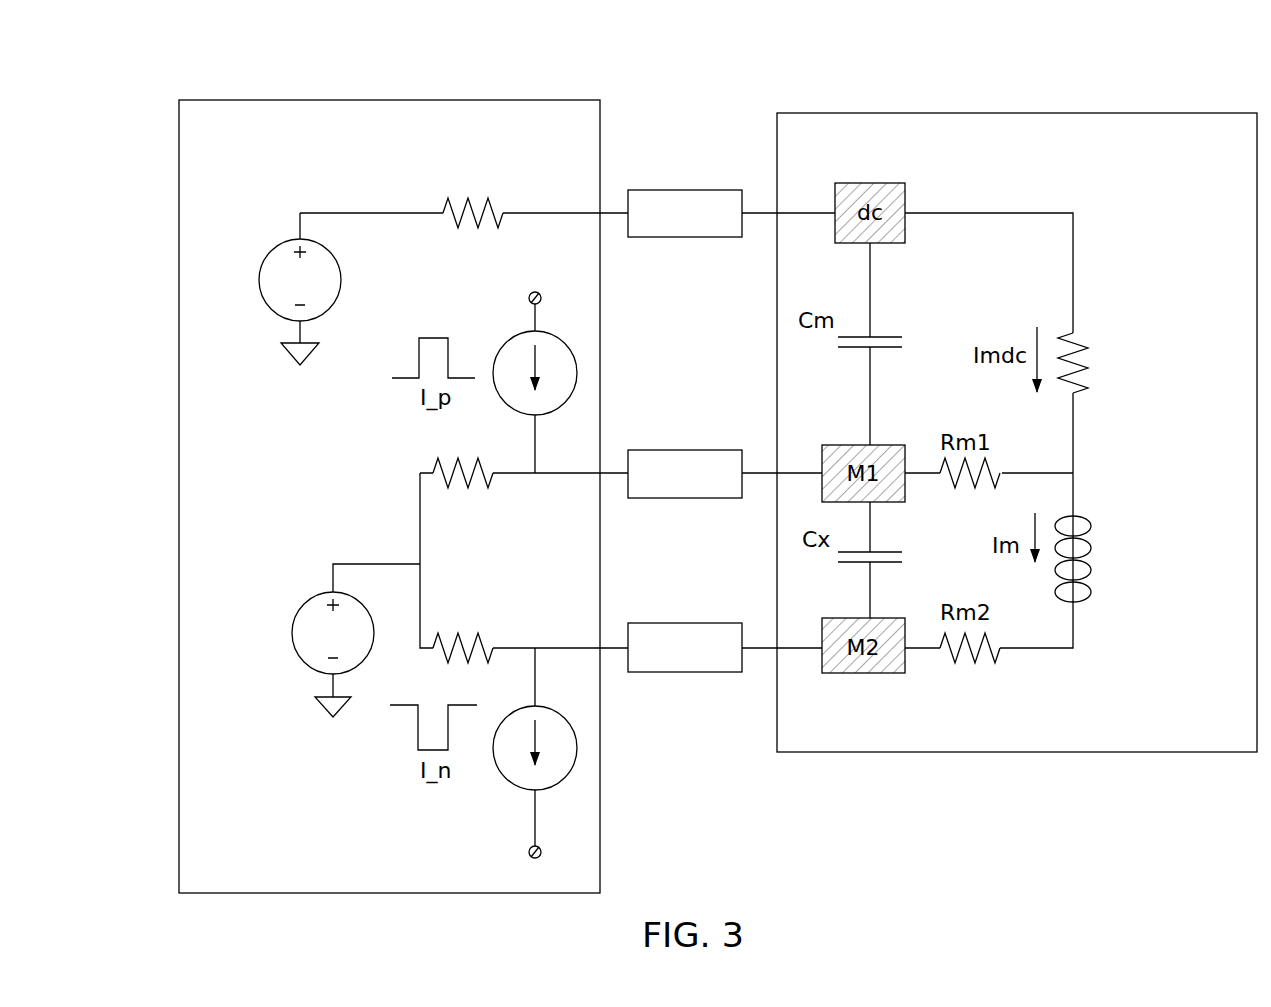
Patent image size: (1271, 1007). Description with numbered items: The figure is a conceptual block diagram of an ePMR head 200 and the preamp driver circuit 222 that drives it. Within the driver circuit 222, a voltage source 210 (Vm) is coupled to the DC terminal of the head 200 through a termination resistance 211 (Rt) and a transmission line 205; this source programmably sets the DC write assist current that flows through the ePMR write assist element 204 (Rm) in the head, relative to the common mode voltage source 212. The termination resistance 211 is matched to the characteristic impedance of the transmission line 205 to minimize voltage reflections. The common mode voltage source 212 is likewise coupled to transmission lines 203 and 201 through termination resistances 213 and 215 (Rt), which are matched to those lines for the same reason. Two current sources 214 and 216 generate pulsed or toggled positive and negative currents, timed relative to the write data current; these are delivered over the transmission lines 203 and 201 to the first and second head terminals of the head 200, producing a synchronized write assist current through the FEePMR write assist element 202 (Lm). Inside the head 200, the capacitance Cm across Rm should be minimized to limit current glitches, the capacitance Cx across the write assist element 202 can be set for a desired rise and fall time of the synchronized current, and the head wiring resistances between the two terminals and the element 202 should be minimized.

The driver circuit 222 is at (382, 82).
The head 200 is at (1046, 98).
The voltage source 210 is at (282, 227).
The termination resistance 211 is at (435, 190).
The current source 214 is at (510, 330).
The common mode voltage source 212 is at (285, 602).
The termination resistance 213 is at (500, 490).
The termination resistance 215 is at (495, 630).
The current source 216 is at (498, 777).
The transmission line 205 is at (685, 189).
The transmission line 203 is at (685, 449).
The transmission line 201 is at (685, 622).
The ePMR write assist element 204 is at (1110, 328).
The FEePMR write assist element 202 is at (1103, 522).